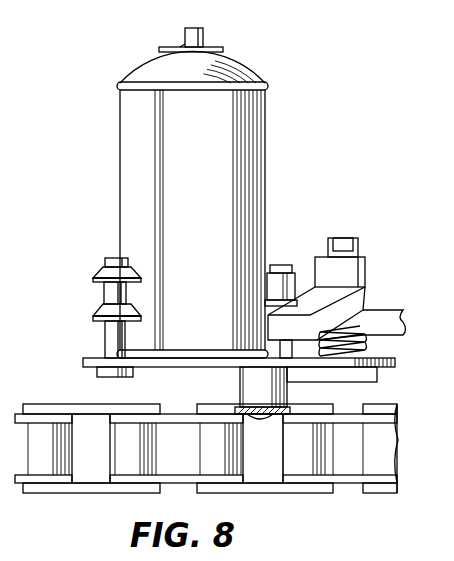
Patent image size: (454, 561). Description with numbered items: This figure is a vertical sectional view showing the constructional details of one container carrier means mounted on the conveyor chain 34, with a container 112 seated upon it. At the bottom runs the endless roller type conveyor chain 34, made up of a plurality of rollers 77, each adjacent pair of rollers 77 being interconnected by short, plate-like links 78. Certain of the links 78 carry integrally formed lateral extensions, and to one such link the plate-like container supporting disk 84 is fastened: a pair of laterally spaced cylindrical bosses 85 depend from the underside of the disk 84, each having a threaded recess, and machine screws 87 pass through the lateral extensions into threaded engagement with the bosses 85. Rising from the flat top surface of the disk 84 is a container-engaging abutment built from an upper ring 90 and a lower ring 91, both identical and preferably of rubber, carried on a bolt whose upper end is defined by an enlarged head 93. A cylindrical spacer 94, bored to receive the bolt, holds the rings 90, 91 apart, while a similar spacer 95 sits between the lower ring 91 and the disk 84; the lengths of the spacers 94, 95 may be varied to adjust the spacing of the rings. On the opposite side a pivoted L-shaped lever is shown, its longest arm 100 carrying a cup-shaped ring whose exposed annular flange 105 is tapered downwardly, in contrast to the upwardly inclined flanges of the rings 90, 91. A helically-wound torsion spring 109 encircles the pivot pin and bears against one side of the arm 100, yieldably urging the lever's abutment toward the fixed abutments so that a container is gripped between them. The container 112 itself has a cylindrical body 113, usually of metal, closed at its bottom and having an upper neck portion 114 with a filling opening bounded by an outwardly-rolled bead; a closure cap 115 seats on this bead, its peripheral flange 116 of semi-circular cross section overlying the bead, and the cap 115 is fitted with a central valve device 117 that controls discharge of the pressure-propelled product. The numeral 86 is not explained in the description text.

The container 112 is at (268, 120).
The cylindrical body 113 is at (245, 175).
The upper neck portion 114 is at (247, 72).
The closure cap 115 is at (182, 47).
The peripheral flange 116 is at (223, 52).
The central valve device 117 is at (203, 33).
The upper ring 90 is at (103, 268).
The cylindrical spacer 94 is at (105, 290).
The lower ring 91 is at (105, 320).
The spacer 95 is at (108, 345).
The exposed annular flange 105 is at (135, 275).
The container supporting disk 84 is at (85, 360).
The cylindrical boss 85 is at (287, 393).
The machine screw 87 is at (260, 424).
The enlarged head 93 is at (290, 266).
The arm 100 is at (345, 308).
The torsion spring 109 is at (355, 345).
The conveyor chain 34 is at (322, 493).
The link 78 is at (278, 492).
The roller 77 is at (318, 464).
The chain link 86 is at (425, 448).